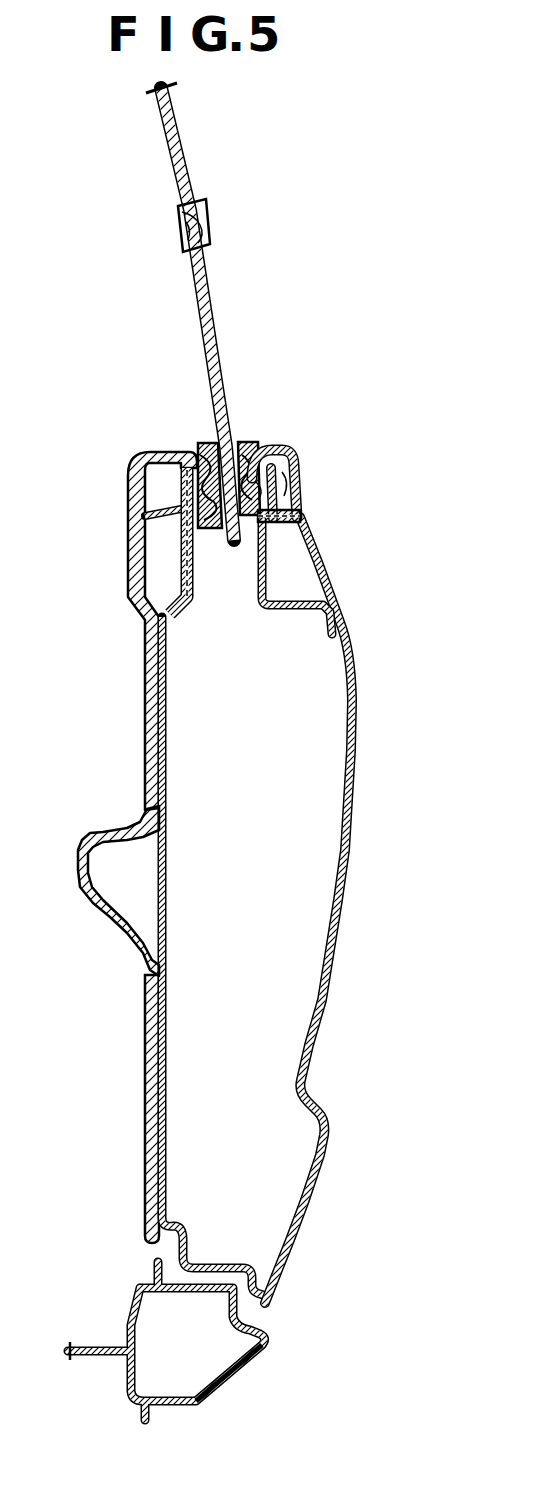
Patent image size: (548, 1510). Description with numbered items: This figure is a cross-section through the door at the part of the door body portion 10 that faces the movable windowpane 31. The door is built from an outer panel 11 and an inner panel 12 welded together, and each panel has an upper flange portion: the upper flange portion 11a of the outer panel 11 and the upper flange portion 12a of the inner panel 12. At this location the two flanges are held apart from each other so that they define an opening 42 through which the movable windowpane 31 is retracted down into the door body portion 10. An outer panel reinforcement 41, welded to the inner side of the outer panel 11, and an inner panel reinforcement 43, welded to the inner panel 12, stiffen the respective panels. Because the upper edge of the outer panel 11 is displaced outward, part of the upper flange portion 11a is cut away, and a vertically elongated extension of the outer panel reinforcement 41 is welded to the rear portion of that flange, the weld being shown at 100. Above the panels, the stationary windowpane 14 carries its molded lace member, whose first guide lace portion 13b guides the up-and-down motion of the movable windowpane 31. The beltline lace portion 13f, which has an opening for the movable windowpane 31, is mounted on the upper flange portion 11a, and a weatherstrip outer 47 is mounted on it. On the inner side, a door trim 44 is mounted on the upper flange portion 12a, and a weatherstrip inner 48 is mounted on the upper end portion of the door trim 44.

The door body portion 10 is at (347, 895).
The outer panel 11 is at (353, 746).
The upper flange portion of the outer panel 11a is at (295, 473).
The inner panel 12 is at (166, 867).
The upper flange portion of the inner panel 12a is at (175, 488).
The first guide lace portion 13b is at (207, 227).
The beltline lace portion 13f is at (283, 447).
The stationary windowpane 14 is at (182, 160).
The movable windowpane 31 is at (217, 330).
The outer panel reinforcement 41 is at (290, 610).
The opening 42 is at (229, 556).
The inner panel reinforcement 43 is at (190, 607).
The door trim 44 is at (103, 830).
The weatherstrip outer 47 is at (240, 447).
The weatherstrip inner 48 is at (200, 449).
The weld 100 is at (298, 501).